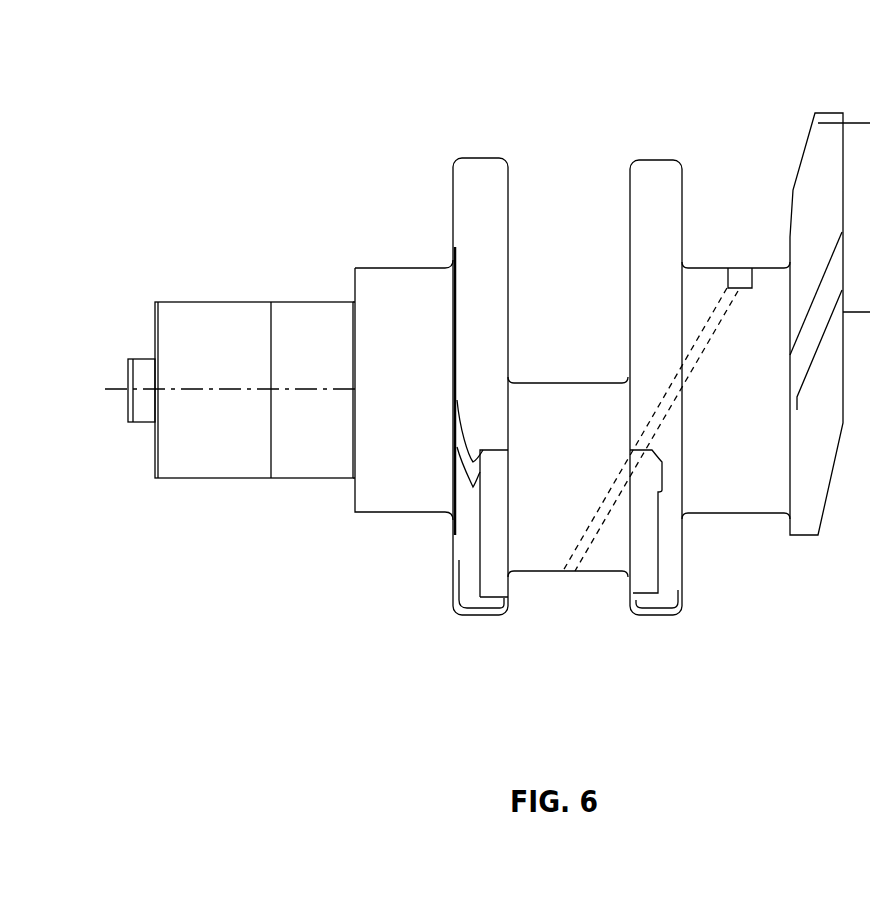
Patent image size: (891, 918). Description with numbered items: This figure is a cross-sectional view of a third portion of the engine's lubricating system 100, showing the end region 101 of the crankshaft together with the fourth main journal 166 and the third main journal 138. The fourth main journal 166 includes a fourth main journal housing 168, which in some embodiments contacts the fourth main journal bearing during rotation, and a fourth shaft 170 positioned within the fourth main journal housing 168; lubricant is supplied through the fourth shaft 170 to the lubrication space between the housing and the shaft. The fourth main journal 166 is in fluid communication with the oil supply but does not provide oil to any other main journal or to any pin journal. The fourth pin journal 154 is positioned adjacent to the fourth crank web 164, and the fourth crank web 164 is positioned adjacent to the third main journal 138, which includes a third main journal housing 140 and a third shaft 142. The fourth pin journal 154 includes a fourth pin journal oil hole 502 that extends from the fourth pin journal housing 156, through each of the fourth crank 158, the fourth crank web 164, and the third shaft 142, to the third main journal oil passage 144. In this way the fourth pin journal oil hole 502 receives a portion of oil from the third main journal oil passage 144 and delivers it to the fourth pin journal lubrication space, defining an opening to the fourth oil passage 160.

The crankshaft 100 is at (229, 117).
The shaft end portion 101 is at (284, 269).
The third main journal 138 is at (738, 542).
The third main journal housing 140 is at (707, 268).
The third shaft 142 is at (757, 467).
The third main journal oil passage 144 is at (737, 268).
The fourth pin journal 154 is at (530, 595).
The fourth pin journal housing 156 is at (545, 383).
The fourth crank 158 is at (583, 423).
The fourth oil passage 160 is at (612, 543).
The fourth crank web 164 is at (653, 615).
The fourth main journal 166 is at (398, 537).
The fourth main journal housing 168 is at (377, 268).
The fourth shaft 170 is at (417, 318).
The fourth pin journal oil hole 502 is at (568, 572).